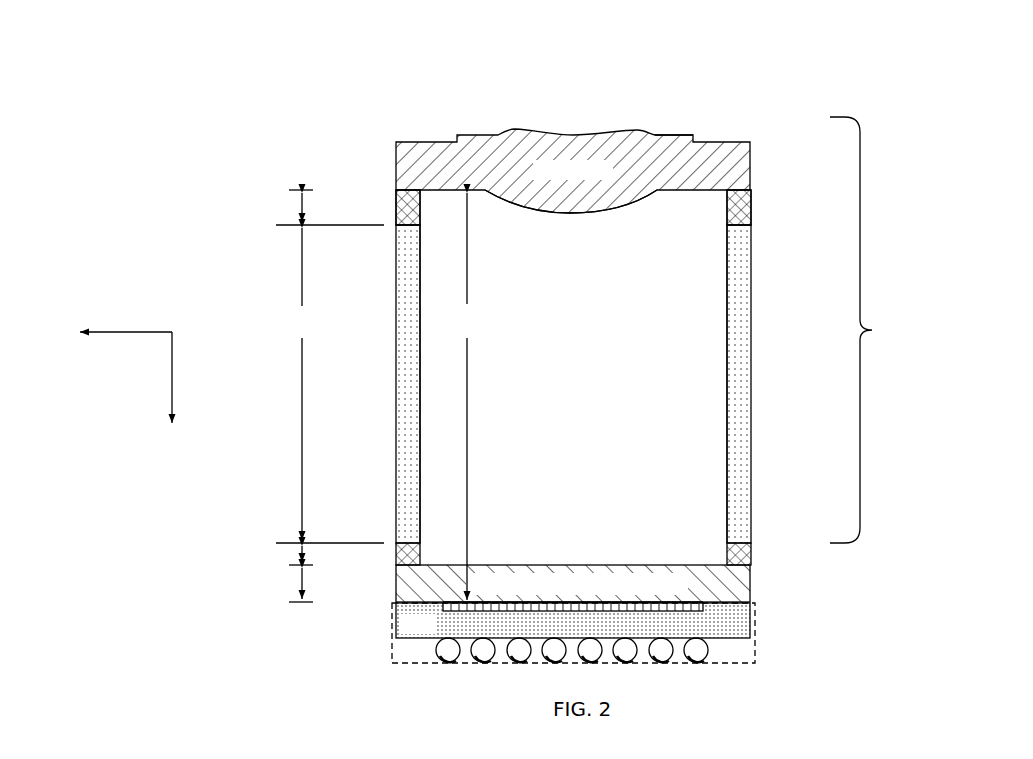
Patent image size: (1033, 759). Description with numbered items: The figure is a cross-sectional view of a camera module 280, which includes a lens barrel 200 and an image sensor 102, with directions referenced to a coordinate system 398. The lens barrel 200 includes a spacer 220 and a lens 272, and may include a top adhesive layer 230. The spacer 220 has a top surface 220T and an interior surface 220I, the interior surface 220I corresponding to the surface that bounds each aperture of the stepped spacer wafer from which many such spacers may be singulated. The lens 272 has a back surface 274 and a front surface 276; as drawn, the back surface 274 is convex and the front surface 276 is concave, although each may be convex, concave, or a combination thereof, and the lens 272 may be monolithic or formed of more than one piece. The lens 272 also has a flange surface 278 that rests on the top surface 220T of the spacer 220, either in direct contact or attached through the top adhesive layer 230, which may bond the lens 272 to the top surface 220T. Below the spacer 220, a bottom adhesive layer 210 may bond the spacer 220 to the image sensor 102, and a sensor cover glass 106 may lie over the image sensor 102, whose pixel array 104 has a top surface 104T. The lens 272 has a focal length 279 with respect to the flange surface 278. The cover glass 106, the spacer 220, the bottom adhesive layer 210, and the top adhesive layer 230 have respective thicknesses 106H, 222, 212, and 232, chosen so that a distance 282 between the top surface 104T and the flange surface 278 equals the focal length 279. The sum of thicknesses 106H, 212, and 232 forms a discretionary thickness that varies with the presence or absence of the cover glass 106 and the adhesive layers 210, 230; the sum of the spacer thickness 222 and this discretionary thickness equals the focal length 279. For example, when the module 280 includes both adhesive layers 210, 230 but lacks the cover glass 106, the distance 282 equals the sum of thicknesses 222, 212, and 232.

The camera module 280 is at (170, 184).
The coordinate system 398 is at (123, 381).
The lens barrel 200 is at (582, 380).
The lens 272 is at (573, 178).
The front surface 276 is at (610, 131).
The back surface 274 is at (595, 218).
The flange surface 278 is at (734, 201).
The top adhesive layer 230 is at (752, 215).
The top surface 220T is at (405, 211).
The spacer 220 is at (395, 386).
The interior surface 220I is at (422, 386).
The bottom adhesive layer 210 is at (752, 557).
The sensor cover glass 106 is at (573, 555).
The top surface 104T is at (697, 600).
The pixel array 104 is at (573, 620).
The image sensor 102 is at (755, 632).
The thickness 232 is at (300, 218).
The thickness 222 is at (330, 385).
The thickness 212 is at (300, 560).
The thickness 106H is at (300, 590).
The focal length 279 is at (474, 396).
The distance 282 is at (474, 396).